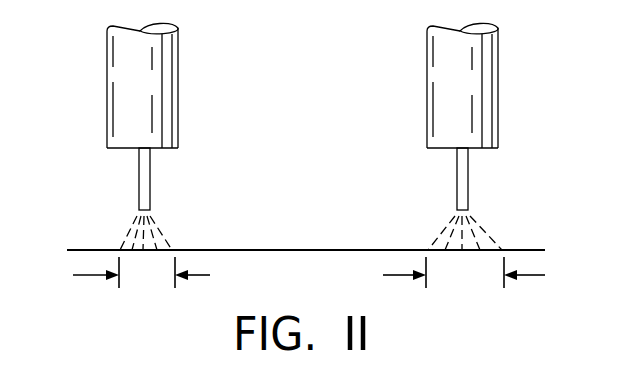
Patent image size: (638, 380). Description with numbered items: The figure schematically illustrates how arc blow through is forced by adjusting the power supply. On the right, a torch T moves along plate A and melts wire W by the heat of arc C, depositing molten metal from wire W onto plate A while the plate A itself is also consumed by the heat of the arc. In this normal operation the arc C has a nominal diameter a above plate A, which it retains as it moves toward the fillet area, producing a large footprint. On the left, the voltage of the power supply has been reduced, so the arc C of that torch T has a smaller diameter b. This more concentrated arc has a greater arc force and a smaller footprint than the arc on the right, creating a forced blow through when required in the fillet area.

The torch T is at (190, 91).
The wire W is at (146, 183).
The arc C is at (167, 237).
The plate A is at (303, 242).
The reduced arc diameter b is at (141, 273).
The nominal arc diameter a is at (464, 273).